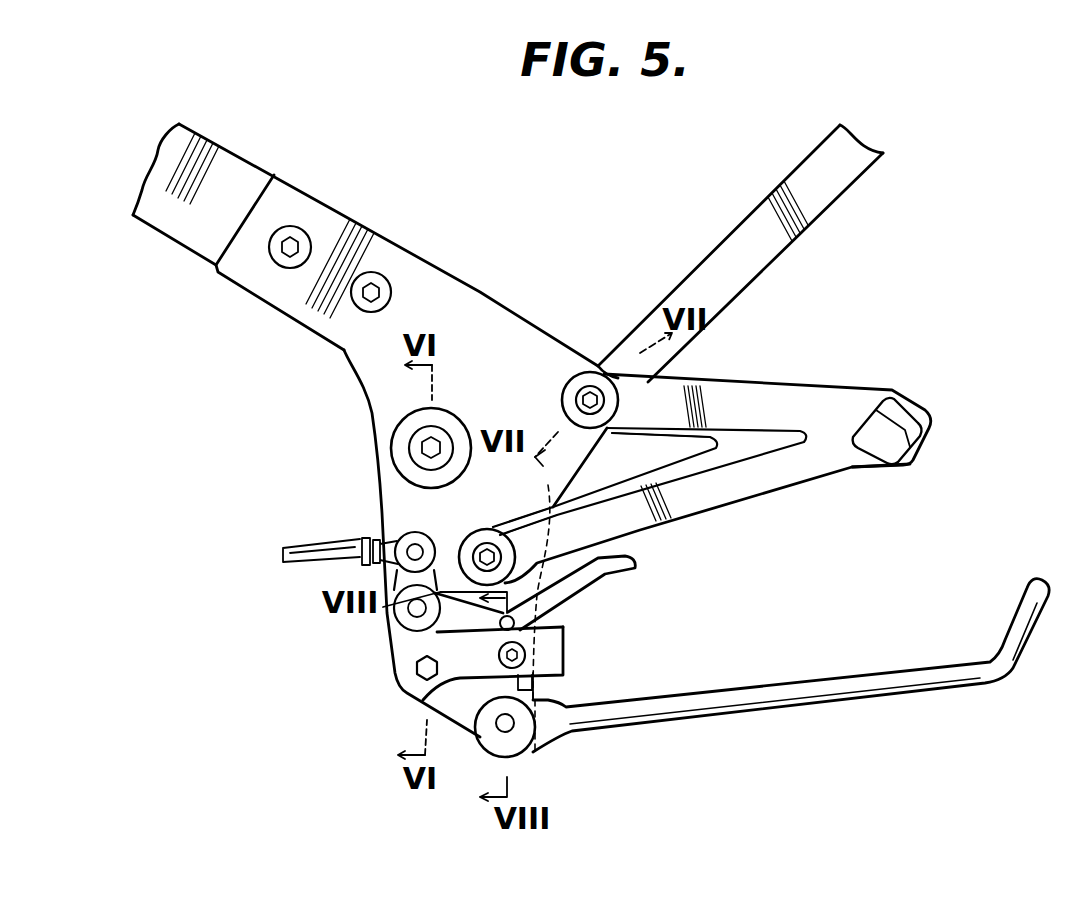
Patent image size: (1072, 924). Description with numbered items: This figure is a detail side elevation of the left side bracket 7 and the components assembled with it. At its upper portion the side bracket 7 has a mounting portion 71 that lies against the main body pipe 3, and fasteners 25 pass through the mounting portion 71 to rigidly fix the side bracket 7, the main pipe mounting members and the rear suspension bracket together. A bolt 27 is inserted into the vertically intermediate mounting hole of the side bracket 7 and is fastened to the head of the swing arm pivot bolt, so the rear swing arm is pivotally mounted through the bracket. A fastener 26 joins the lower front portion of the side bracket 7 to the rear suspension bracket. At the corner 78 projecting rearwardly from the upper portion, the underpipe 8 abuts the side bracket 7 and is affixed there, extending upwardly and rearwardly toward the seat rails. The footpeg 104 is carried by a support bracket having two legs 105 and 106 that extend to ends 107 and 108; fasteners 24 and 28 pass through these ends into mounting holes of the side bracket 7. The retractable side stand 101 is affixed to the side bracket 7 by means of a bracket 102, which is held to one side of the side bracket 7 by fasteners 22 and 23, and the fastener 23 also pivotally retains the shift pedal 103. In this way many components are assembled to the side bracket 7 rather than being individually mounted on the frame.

The main body pipe 3 is at (233, 168).
The mounting portion 71 is at (352, 228).
The fastener 25 is at (280, 268).
The side bracket 7 is at (477, 282).
The bolt 27 is at (420, 451).
The corner 78 is at (576, 365).
The fastener 28 is at (557, 398).
The underpipe 8 is at (822, 195).
The leg 105 is at (820, 398).
The footpeg 104 is at (890, 443).
The leg 106 is at (840, 460).
The end 108 is at (622, 412).
The end 107 is at (513, 535).
The fastener 24 is at (470, 548).
The shift pedal 103 is at (570, 598).
The fastener 23 is at (518, 630).
The fastener 22 is at (527, 660).
The fastener 26 is at (415, 670).
The bracket 102 is at (470, 710).
The retractable side stand 101 is at (805, 693).